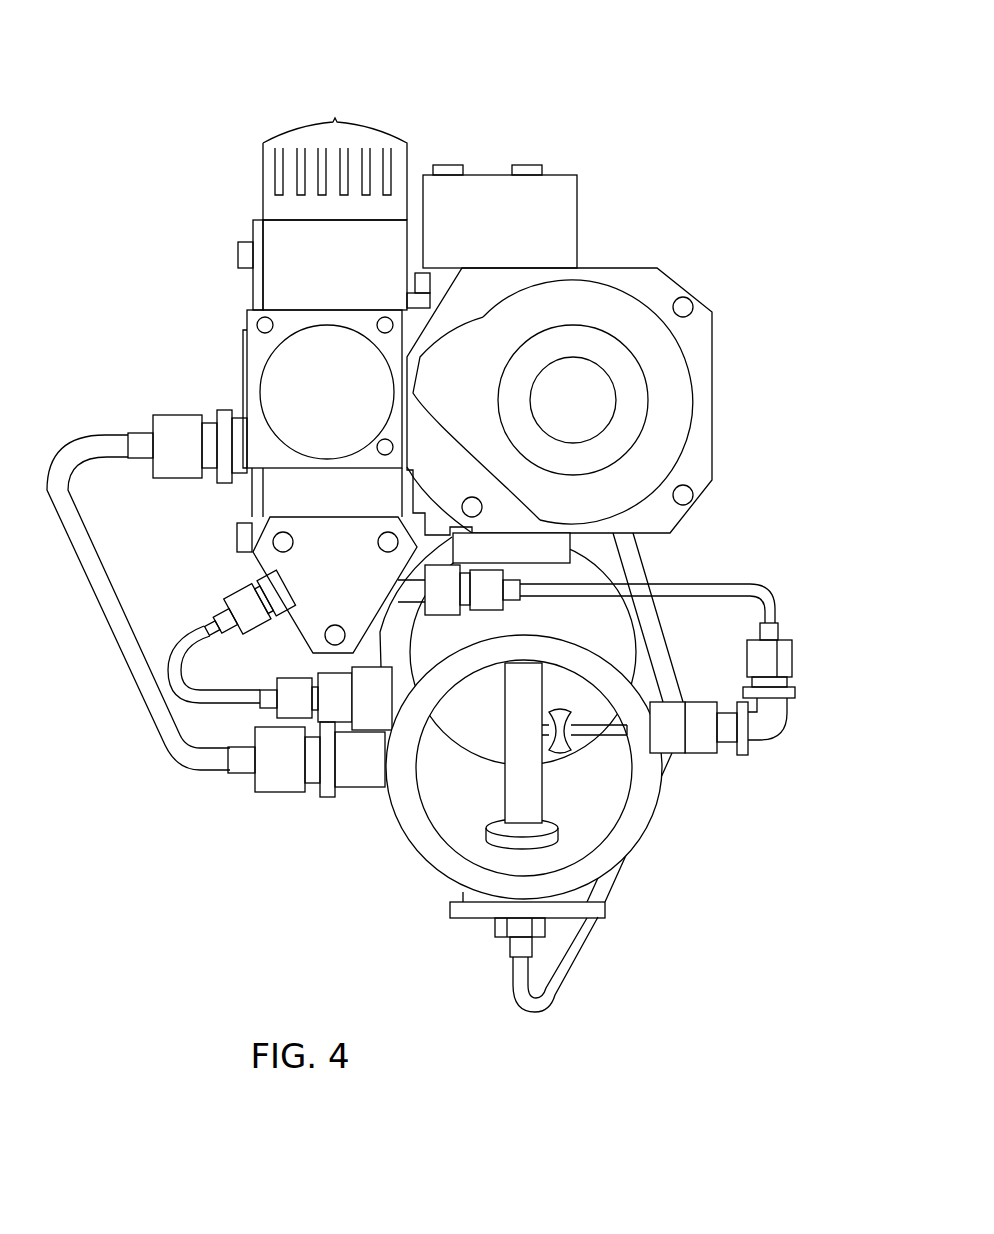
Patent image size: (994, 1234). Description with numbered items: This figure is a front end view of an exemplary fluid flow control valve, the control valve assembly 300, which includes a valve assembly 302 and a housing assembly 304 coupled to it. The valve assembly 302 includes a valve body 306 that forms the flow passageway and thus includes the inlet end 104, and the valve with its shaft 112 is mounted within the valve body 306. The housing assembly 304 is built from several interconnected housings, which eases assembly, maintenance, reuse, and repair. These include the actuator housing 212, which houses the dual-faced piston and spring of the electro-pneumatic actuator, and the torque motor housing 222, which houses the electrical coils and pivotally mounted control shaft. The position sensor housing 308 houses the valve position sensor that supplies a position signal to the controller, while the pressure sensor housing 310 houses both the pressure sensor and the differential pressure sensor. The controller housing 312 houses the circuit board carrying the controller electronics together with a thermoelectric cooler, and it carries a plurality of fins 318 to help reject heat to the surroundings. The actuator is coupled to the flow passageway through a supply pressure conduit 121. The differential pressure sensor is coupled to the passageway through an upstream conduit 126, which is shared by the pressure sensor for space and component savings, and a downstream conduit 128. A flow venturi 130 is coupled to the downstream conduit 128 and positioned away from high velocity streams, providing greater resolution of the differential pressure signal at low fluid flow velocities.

The control valve assembly 300 is at (510, 92).
The fins 318 is at (335, 155).
The controller housing 312 is at (322, 286).
The torque motor housing 222 is at (312, 406).
The position sensor housing 308 is at (482, 246).
The housing assembly 304 is at (700, 258).
The actuator housing 212 is at (697, 442).
The pressure sensor housing 310 is at (318, 594).
The supply pressure conduit 121 is at (62, 498).
The downstream conduit 128 is at (200, 633).
The valve body 306 is at (357, 860).
The inlet end 104 is at (567, 809).
The shaft 112 is at (523, 795).
The flow venturi 130 is at (547, 708).
The upstream conduit 126 is at (707, 588).
The valve assembly 302 is at (785, 577).